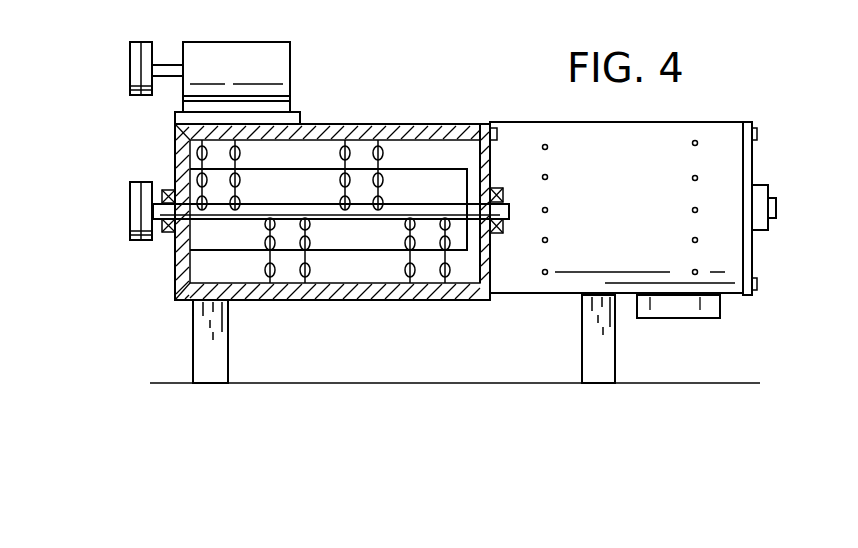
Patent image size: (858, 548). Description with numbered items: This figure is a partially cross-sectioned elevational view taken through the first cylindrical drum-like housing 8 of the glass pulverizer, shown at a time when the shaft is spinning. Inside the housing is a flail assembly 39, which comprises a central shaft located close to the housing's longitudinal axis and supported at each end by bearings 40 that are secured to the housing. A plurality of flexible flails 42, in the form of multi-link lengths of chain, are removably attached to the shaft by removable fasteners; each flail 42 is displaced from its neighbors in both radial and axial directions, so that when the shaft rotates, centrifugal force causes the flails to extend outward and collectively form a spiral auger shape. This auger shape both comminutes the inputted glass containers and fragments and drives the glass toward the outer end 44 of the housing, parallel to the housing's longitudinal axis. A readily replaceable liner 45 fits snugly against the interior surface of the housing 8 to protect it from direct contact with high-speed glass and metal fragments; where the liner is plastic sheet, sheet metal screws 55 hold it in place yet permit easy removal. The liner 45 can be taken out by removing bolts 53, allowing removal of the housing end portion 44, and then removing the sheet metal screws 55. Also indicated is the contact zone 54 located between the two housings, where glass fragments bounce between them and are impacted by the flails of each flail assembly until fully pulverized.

The first cylindrical drum-like housing 8 is at (354, 215).
The flail assembly 39 is at (250, 248).
The bearings 40 is at (165, 242).
The flexible flails 42 is at (240, 152).
The outer end of the housing 44 is at (488, 179).
The replaceable liner 45 is at (320, 136).
The bolts 53 is at (507, 126).
The contact zone 54 is at (400, 177).
The sheet metal screws 55 is at (548, 209).